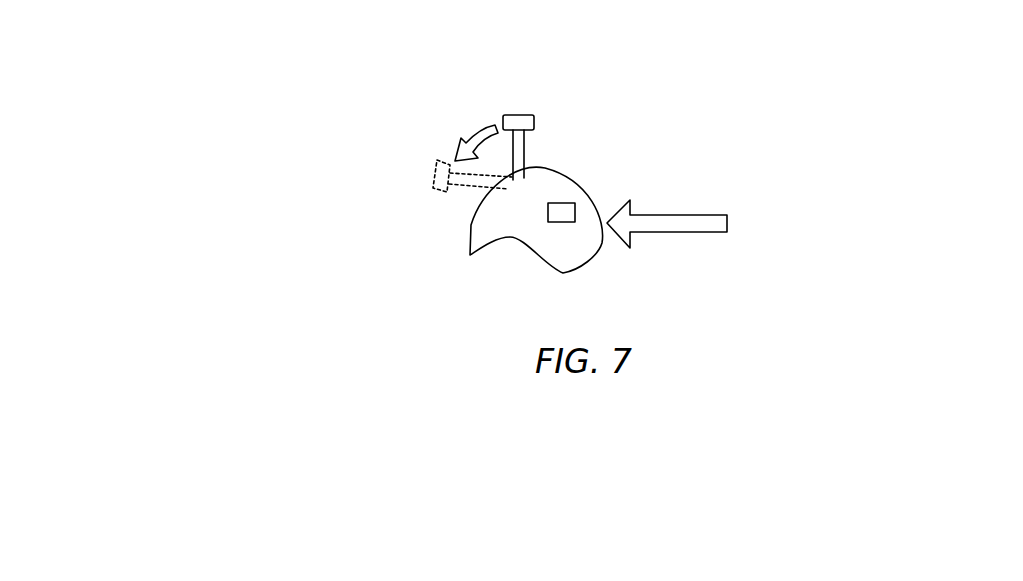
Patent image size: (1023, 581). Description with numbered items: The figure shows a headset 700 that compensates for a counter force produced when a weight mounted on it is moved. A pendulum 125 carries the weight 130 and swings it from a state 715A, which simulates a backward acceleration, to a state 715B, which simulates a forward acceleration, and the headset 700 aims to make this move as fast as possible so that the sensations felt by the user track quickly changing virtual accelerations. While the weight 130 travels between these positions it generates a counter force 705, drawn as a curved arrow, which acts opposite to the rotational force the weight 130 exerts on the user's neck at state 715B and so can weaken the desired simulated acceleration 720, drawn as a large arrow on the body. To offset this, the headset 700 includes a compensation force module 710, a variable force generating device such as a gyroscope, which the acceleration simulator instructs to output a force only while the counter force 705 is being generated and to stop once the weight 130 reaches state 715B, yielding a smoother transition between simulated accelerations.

The headset 700 is at (568, 156).
The counter force 705 is at (473, 133).
The compensation force module 710 is at (576, 212).
The state 715A is at (435, 180).
The state 715B is at (620, 121).
The simulated acceleration 720 is at (677, 233).
The pendulum 125 is at (523, 147).
The weight 130 is at (537, 115).